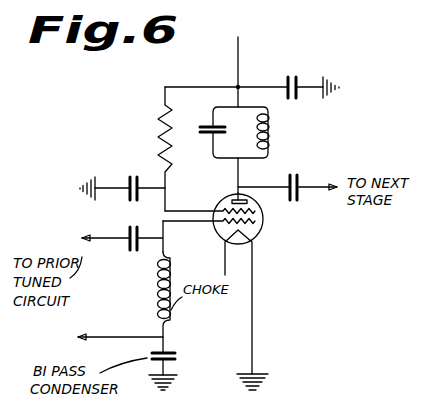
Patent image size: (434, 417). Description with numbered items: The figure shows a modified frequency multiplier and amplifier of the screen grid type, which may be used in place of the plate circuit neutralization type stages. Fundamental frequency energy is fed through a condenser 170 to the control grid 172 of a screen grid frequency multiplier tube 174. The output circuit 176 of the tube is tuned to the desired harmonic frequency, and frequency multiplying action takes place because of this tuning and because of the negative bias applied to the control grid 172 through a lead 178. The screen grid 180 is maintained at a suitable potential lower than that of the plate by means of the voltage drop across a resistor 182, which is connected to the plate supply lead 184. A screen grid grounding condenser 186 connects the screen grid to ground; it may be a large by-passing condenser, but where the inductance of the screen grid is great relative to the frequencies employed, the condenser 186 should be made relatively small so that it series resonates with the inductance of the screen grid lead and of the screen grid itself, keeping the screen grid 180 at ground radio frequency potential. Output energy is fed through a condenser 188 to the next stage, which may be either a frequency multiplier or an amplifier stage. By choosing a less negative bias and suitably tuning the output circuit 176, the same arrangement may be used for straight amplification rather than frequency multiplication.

The condenser 170 is at (134, 226).
The control grid 172 is at (261, 224).
The screen grid frequency multiplier tube 174 is at (258, 238).
The output circuit 176 is at (247, 138).
The lead 178 is at (131, 322).
The screen grid 180 is at (260, 211).
The resistor 182 is at (160, 117).
The plate supply lead 184 is at (241, 54).
The screen grid grounding condenser 186 is at (141, 157).
The condenser 188 is at (298, 176).